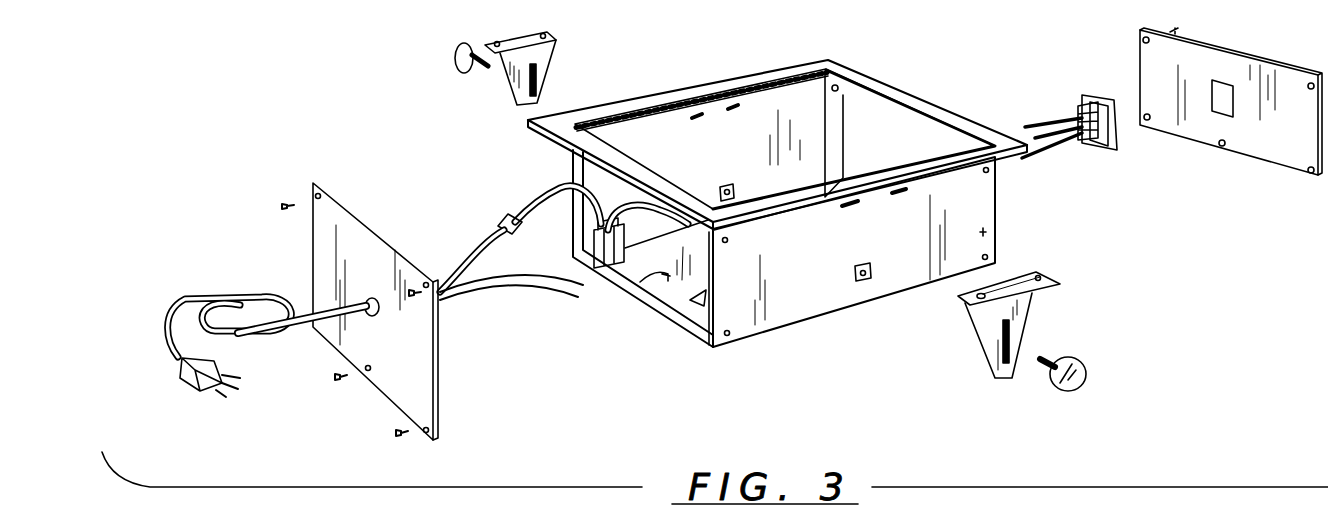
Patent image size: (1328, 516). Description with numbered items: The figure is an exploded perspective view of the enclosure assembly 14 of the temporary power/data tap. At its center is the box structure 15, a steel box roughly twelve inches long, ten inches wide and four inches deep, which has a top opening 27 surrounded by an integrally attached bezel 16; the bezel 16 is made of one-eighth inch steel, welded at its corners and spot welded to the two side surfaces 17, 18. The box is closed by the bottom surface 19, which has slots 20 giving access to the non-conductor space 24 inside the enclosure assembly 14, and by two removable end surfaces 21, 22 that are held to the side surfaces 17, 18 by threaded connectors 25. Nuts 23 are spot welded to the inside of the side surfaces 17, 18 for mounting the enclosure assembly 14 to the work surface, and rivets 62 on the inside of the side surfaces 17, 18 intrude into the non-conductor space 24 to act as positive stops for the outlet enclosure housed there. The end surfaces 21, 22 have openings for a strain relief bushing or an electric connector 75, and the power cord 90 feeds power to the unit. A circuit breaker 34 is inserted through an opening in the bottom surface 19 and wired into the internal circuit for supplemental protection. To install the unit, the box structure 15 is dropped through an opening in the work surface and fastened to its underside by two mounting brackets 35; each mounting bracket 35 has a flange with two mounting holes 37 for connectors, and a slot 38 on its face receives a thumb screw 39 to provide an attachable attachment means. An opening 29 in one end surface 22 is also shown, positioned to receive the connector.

The enclosure assembly 14 is at (438, 99).
The box structure 15 is at (830, 63).
The bezel 16 is at (918, 107).
The side surface 17 is at (764, 127).
The side surface 18 is at (986, 232).
The bottom surface 19 is at (628, 282).
The slots 20 is at (687, 250).
The end surface 21 is at (322, 246).
The end surface 22 is at (1248, 55).
The nuts 23 is at (568, 148).
The non-conductor space 24 is at (740, 165).
The threaded connectors 25 is at (280, 206).
The top opening 27 is at (669, 157).
The receptacle opening 29 is at (1224, 110).
The circuit breaker 34 is at (590, 245).
The mounting bracket 35 is at (505, 78).
The mounting holes 37 is at (1052, 289).
The slot 38 is at (1010, 332).
The thumb screw 39 is at (1087, 375).
The rivets 62 is at (733, 107).
The electric connector 75 is at (1098, 148).
The power cord 90 is at (176, 358).